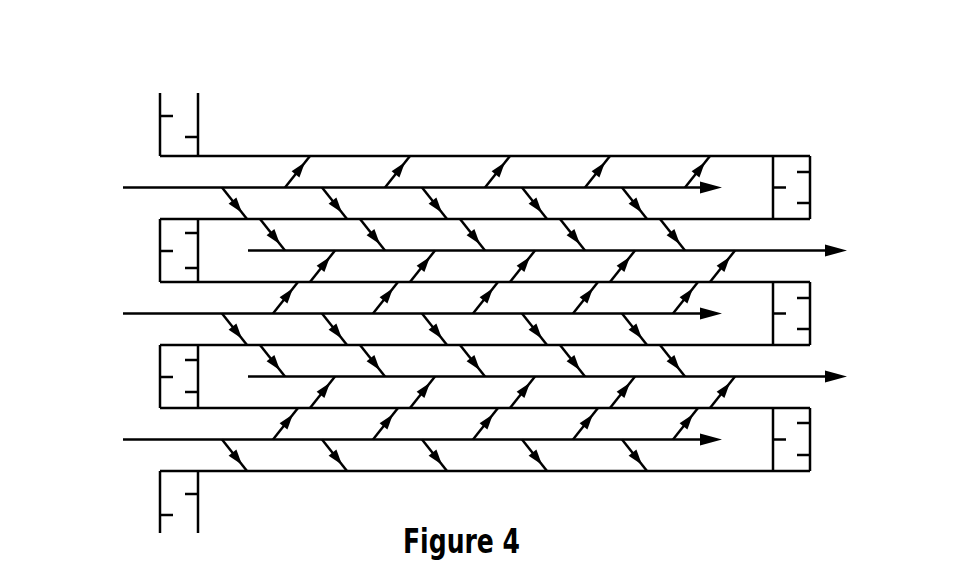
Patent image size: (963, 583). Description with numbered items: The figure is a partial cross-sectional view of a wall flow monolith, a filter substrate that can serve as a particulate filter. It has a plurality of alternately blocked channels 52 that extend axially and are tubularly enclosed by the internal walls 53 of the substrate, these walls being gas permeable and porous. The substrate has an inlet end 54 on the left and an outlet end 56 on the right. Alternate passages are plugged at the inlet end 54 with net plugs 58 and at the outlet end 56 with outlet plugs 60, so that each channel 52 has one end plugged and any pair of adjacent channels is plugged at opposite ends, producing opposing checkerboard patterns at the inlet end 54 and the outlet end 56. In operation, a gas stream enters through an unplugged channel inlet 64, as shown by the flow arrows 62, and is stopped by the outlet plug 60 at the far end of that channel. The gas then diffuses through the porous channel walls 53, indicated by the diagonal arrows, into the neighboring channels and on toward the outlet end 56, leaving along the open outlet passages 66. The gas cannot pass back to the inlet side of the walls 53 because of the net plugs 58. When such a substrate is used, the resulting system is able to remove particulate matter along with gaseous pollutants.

The channels 52 is at (222, 232).
The internal walls 53 is at (480, 219).
The inlet end 54 is at (120, 58).
The outlet end 56 is at (866, 122).
The net plugs 58 is at (168, 133).
The outlet plugs 60 is at (807, 194).
The first fluid flow 62 is at (262, 187).
The channel inlet 64 is at (184, 182).
The second fluid passage 66 is at (805, 275).